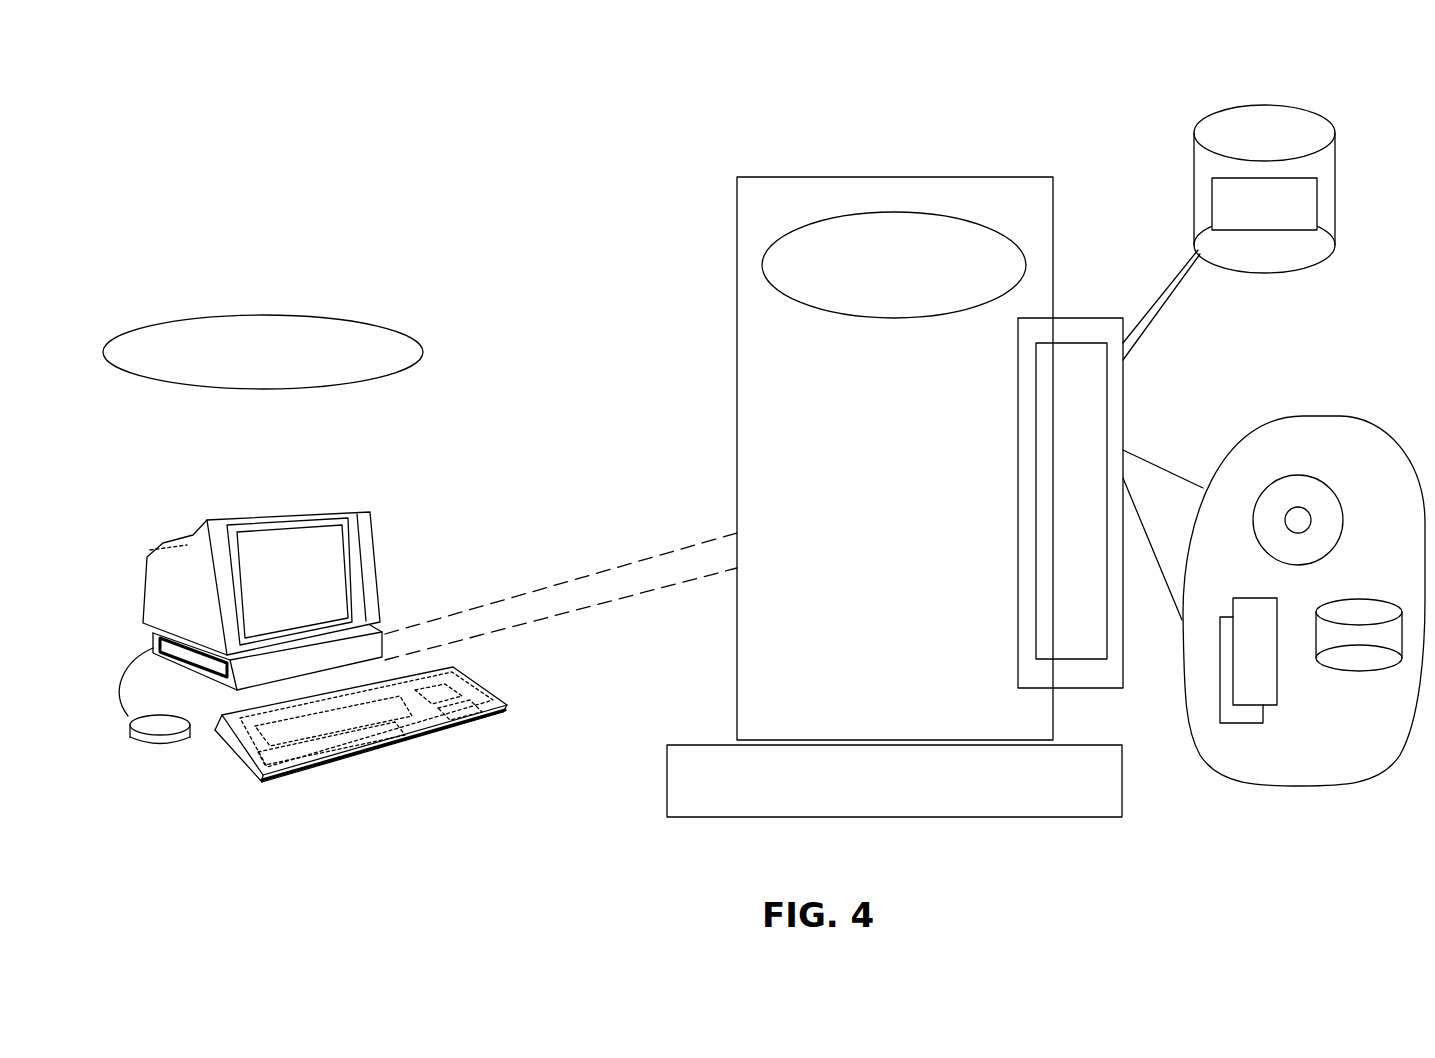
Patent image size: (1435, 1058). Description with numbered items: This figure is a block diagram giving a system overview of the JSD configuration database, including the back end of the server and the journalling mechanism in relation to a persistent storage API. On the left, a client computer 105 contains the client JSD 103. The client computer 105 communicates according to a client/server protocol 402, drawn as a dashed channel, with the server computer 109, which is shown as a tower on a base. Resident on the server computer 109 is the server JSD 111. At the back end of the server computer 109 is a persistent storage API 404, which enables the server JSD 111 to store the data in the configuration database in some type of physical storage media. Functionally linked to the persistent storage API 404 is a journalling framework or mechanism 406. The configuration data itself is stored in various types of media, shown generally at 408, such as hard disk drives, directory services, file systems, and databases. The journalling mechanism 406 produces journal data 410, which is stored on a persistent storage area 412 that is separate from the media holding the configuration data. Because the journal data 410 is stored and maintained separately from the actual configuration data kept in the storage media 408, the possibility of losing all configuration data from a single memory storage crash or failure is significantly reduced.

The client JSD 103 is at (422, 352).
The client computer 105 is at (380, 541).
The server computer 109 is at (737, 208).
The server JSD 111 is at (893, 213).
The client/server protocol 402 is at (667, 553).
The persistent storage API 404 is at (1037, 550).
The journalling mechanism 406 is at (1123, 388).
The storage media 408 is at (1300, 416).
The journal data 410 is at (1252, 208).
The persistent storage area 412 is at (1195, 157).